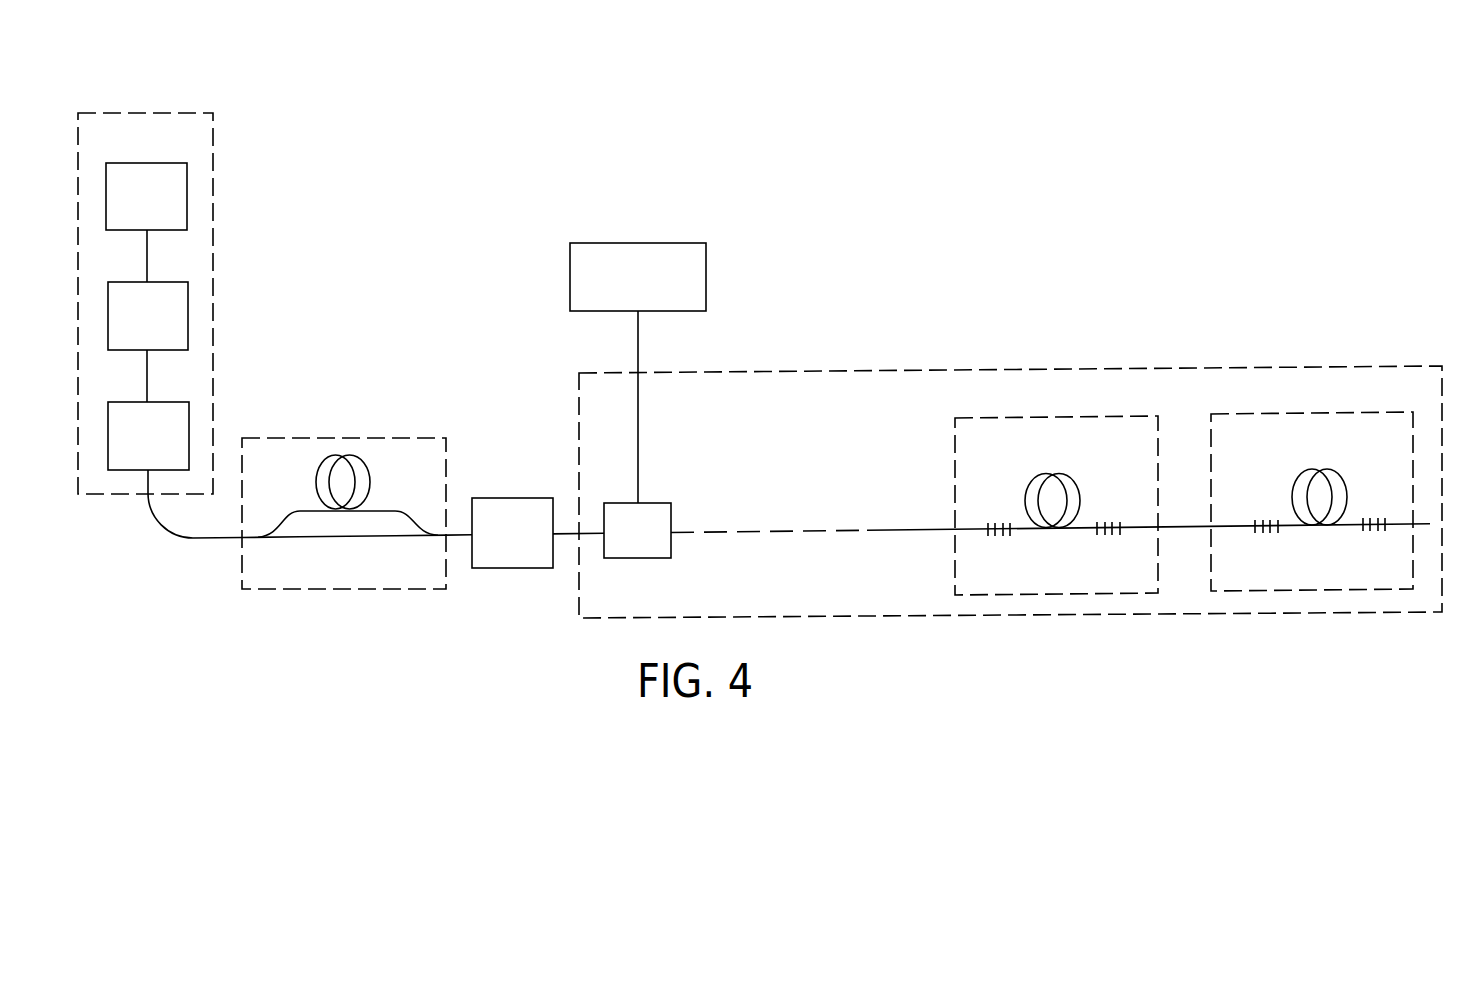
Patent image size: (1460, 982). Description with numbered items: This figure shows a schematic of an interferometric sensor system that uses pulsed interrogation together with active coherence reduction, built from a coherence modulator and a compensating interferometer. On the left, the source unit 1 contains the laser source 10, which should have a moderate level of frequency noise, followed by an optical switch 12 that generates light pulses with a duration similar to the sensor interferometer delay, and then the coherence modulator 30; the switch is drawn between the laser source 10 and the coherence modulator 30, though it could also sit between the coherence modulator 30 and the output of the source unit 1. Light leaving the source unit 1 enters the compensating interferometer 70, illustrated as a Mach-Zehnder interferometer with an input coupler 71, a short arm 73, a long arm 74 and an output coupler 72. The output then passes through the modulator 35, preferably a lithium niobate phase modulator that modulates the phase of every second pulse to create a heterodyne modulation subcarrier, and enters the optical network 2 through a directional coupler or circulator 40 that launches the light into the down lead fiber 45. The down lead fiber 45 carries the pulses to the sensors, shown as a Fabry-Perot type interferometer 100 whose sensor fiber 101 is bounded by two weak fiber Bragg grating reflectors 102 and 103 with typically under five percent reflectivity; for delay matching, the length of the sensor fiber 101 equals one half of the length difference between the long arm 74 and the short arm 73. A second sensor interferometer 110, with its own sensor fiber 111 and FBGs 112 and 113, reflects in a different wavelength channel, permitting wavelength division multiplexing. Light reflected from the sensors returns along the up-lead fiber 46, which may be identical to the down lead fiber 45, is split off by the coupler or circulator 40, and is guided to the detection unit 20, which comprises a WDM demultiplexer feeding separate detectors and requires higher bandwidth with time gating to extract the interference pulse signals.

The source unit 1 is at (145, 286).
The optical network 2 is at (1010, 477).
The laser source 10 is at (132, 207).
The optical switch 12 is at (133, 326).
The coherence modulator 30 is at (134, 446).
The detection unit 20 is at (624, 288).
The frequency modulator 35 is at (499, 552).
The directional coupler or circulator 40 is at (623, 547).
The down lead fiber 45 is at (769, 513).
The up-lead fiber 46 is at (1107, 547).
The compensating interferometer 70 is at (344, 498).
The input coupler 71 is at (271, 558).
The output coupler 72 is at (420, 557).
The short arm 73 is at (348, 545).
The long arm 74 is at (363, 482).
The Fabry-Perot type interferometer 100 is at (1055, 488).
The sensor fiber 101 is at (1052, 481).
The fiber Bragg grating reflector 102 is at (1002, 549).
The fiber Bragg grating reflector 103 is at (1112, 549).
The second sensor interferometer 110 is at (1311, 484).
The sensor fiber 111 is at (1319, 478).
The fiber Bragg grating 112 is at (1267, 547).
The fiber Bragg grating 113 is at (1375, 546).